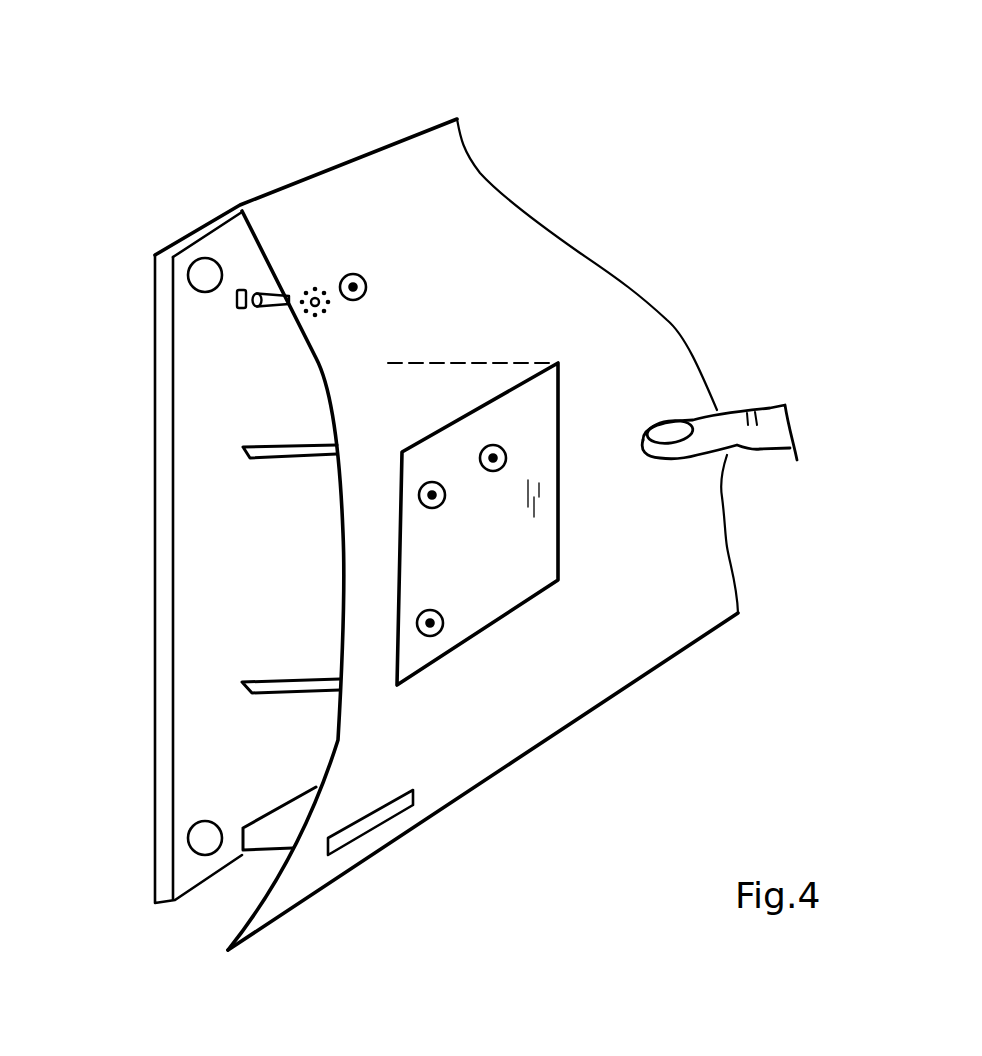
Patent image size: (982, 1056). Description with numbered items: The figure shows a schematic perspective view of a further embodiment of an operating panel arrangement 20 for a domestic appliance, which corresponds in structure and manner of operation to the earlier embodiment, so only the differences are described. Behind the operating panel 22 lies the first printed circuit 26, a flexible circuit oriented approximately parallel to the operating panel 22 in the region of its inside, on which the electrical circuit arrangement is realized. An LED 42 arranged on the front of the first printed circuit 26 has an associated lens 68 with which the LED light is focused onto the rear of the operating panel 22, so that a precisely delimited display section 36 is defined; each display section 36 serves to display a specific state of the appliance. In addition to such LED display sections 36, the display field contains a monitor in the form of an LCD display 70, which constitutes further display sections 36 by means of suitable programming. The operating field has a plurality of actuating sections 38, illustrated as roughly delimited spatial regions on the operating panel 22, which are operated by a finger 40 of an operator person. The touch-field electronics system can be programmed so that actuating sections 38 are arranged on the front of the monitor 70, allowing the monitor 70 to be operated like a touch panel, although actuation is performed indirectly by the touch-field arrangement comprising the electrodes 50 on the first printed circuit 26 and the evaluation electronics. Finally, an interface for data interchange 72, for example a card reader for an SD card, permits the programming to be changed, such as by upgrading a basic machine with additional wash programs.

The operating panel arrangement 20 is at (643, 160).
The operating panel 22 is at (642, 318).
The first printed circuit 26 is at (207, 352).
The display section 36 is at (317, 287).
The actuating section 38 is at (366, 283).
The finger 40 is at (763, 427).
The LED 42 is at (240, 290).
The electrodes 50 is at (203, 837).
The lens 68 is at (263, 297).
The LCD display 70 is at (518, 567).
The interface for data interchange 72 is at (370, 823).